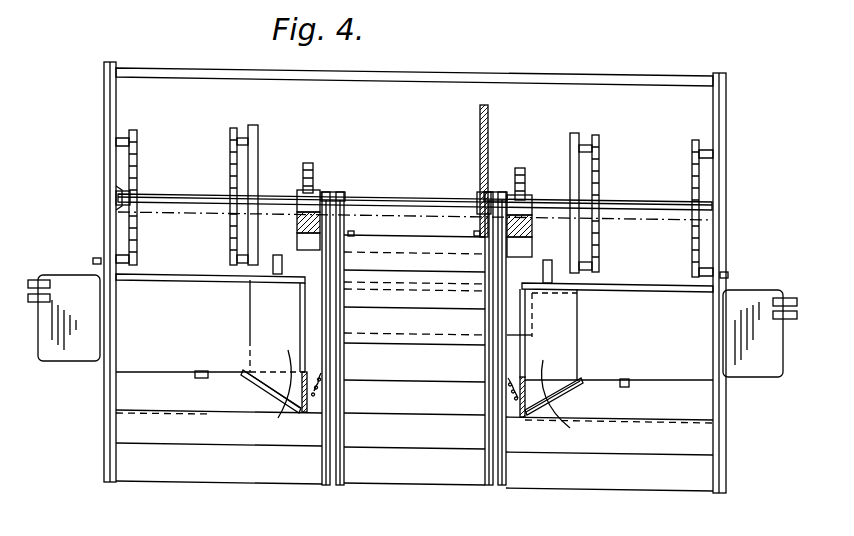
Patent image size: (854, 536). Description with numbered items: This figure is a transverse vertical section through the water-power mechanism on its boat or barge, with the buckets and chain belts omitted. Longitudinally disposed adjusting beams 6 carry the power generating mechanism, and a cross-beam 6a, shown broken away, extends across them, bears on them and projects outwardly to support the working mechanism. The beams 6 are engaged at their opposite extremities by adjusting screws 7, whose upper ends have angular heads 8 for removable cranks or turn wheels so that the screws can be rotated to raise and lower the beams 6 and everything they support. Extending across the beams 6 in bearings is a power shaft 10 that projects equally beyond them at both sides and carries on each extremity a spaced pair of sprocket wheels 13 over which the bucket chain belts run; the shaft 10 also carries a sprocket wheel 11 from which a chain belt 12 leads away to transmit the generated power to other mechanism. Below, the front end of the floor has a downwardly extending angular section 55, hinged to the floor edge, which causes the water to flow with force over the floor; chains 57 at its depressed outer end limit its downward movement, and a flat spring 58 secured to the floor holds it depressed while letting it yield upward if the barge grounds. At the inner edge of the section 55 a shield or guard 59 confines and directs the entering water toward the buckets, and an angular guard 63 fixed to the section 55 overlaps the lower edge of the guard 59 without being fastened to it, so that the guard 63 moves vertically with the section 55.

The adjusting beams 6 is at (297, 223).
The cross-beam 6a is at (122, 196).
The adjusting screws 7 is at (314, 192).
The angular heads 8 is at (413, 170).
The power shafts 10 is at (408, 201).
The sprocket wheel 11 is at (480, 187).
The chain belt 12 is at (480, 128).
The sprocket wheels 13 is at (228, 178).
The downwardly extending angular section 55 is at (414, 344).
The chains 57 is at (325, 386).
The flat spring 58 is at (203, 371).
The shield or guard 59 is at (415, 400).
The angular guard 63 is at (272, 378).